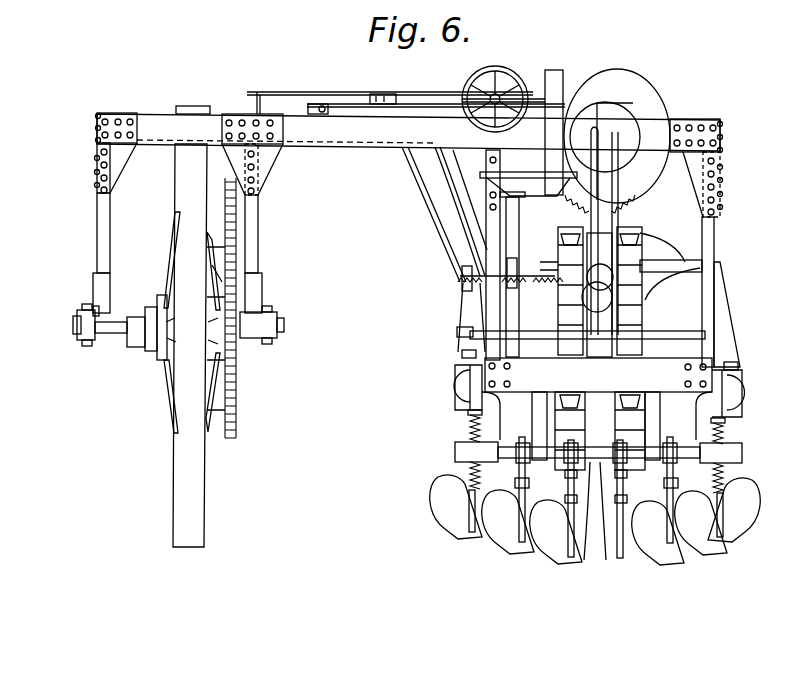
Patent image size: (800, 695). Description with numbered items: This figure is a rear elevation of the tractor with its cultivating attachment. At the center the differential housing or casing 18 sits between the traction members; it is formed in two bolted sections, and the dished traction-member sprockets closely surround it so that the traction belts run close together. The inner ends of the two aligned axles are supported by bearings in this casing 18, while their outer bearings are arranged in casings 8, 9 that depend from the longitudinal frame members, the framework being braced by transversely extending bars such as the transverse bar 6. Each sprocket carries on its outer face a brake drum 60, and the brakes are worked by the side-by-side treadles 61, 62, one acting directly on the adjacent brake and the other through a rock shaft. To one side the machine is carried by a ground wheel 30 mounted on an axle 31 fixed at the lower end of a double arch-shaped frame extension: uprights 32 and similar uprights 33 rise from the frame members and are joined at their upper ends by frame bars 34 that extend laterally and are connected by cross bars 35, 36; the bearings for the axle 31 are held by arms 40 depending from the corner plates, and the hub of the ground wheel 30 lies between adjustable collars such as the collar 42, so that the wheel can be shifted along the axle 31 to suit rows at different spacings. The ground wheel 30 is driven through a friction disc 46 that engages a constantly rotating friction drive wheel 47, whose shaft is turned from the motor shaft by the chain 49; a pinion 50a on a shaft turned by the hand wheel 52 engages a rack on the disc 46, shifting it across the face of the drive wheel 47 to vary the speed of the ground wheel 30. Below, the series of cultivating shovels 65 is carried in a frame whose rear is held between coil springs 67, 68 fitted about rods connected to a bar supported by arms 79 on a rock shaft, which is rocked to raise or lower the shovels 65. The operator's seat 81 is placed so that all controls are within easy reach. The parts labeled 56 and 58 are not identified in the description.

The transverse bar 6 is at (598, 375).
The bearing casing 8 is at (740, 408).
The bearing casing 9 is at (462, 393).
The differential housing 18 is at (588, 556).
The ground wheel 30 is at (176, 481).
The axle 31 is at (110, 336).
The uprights 32 is at (496, 232).
The uprights 33 is at (716, 248).
The frame bars 34 is at (358, 126).
The cross bar 35 is at (288, 145).
The cross bar 36 is at (96, 128).
The arms 40 is at (96, 221).
The collar 42 is at (136, 338).
The friction disc 46 is at (558, 74).
The friction drive wheel 47 is at (642, 88).
The chain 49 is at (636, 222).
The pinion 50a is at (500, 82).
The hand wheel 52 is at (470, 88).
The rods 56 is at (590, 138).
The upper rail 58 is at (296, 96).
The brake drum 60 is at (532, 428).
The brake treadle 61 is at (540, 284).
The brake treadle 62 is at (500, 284).
The cultivating shovels 65 is at (460, 280).
The coil spring 67 is at (469, 428).
The coil spring 68 is at (470, 476).
The arms 79 is at (465, 388).
The seat 81 is at (513, 182).